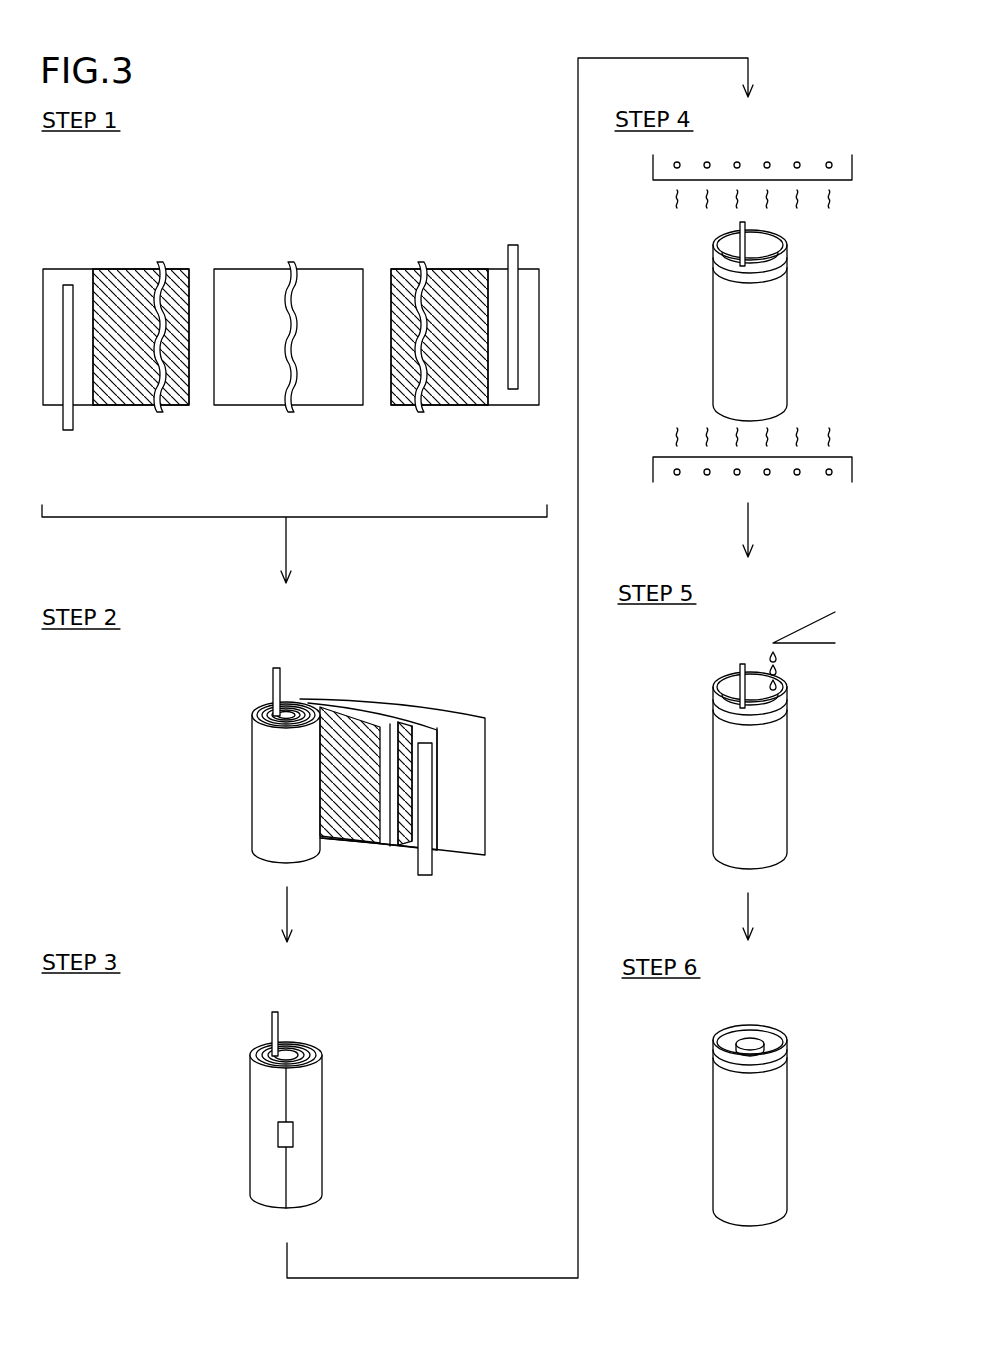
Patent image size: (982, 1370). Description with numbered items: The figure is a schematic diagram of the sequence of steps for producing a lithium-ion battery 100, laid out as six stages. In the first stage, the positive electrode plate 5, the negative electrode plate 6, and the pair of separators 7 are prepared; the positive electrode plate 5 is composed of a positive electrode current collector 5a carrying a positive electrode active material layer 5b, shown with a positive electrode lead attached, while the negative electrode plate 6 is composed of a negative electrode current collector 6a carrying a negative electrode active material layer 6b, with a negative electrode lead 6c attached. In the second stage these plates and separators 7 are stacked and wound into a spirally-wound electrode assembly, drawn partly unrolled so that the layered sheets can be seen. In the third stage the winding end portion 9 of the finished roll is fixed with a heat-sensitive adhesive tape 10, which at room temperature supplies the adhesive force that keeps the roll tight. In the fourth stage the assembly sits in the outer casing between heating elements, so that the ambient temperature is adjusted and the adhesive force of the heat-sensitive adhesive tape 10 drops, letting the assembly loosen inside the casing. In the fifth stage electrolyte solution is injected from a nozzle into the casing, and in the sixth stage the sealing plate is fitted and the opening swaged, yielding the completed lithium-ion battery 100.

The positive electrode plate 5 is at (116, 307).
The positive electrode current collector 5a is at (67, 280).
The positive electrode active material layer 5b is at (120, 290).
The negative electrode plate 6 is at (465, 364).
The negative electrode current collector 6a is at (527, 387).
The negative electrode active material layer 6b is at (461, 385).
The negative electrode lead 6c is at (507, 262).
The separators 7 is at (255, 270).
The winding end portion 9 is at (287, 1107).
The heat-sensitive adhesive tape 10 is at (287, 1135).
The lithium-ion battery 100 is at (712, 1123).